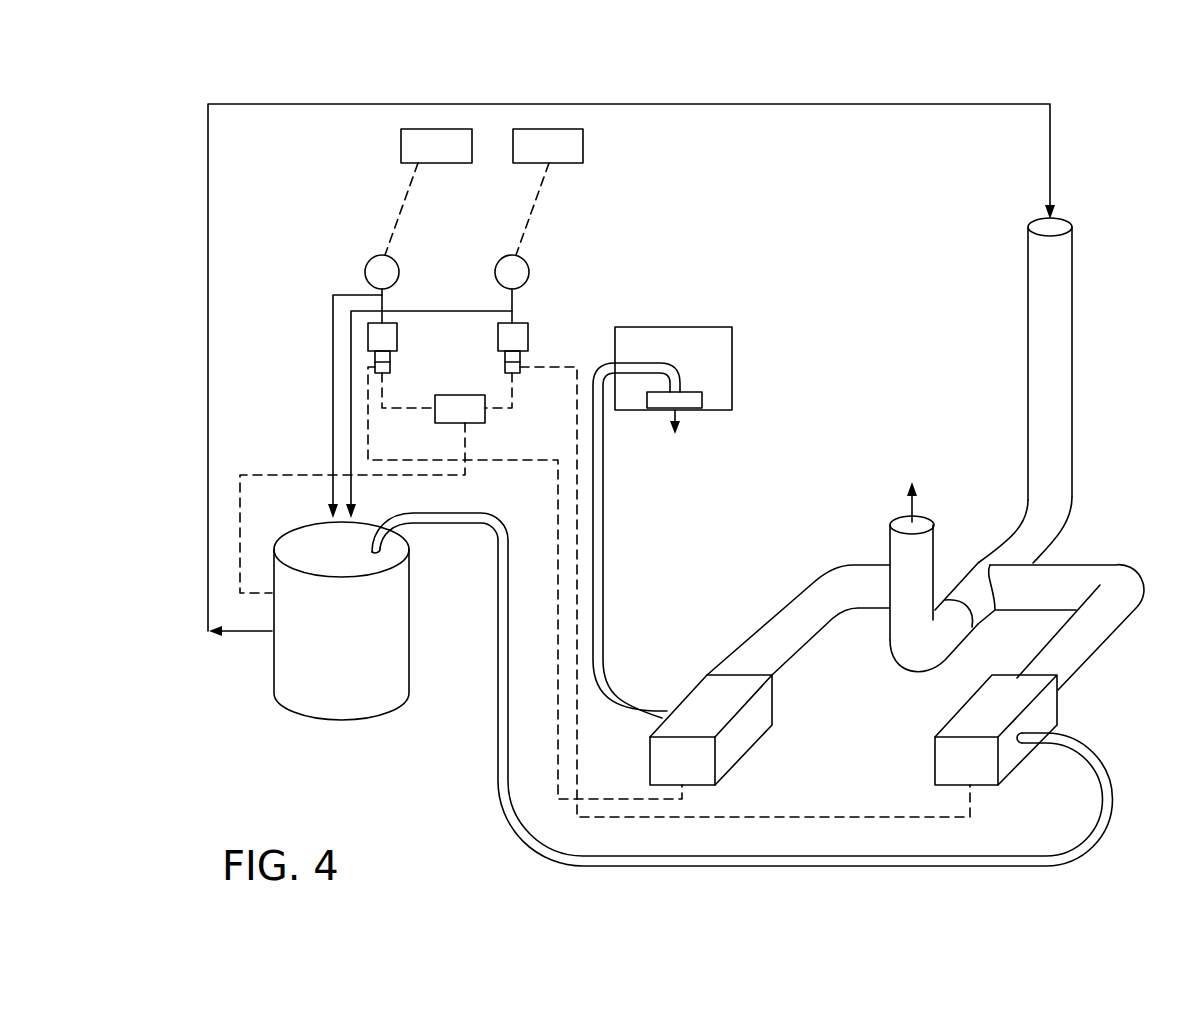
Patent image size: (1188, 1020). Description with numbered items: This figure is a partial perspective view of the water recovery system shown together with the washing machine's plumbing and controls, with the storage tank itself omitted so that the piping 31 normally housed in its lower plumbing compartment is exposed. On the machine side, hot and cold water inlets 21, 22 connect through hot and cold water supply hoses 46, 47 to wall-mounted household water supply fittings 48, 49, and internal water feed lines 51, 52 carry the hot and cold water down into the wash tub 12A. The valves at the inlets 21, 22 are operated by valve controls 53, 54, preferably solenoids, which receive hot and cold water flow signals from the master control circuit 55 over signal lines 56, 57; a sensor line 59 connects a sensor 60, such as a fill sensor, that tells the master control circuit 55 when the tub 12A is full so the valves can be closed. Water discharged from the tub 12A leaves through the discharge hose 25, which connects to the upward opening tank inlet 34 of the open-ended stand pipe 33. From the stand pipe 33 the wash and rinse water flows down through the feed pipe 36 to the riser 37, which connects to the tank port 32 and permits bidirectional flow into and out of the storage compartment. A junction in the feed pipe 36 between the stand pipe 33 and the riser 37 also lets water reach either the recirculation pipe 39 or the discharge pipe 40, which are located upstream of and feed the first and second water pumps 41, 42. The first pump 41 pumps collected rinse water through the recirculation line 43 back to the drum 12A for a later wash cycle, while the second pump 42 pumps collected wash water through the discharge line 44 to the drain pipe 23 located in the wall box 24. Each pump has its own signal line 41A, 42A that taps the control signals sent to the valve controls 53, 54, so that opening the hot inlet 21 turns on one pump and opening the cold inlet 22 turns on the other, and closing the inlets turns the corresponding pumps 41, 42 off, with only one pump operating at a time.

The wash tub 12A is at (300, 693).
The hot water inlet 21 is at (530, 272).
The cold water inlet 22 is at (365, 270).
The drain pipe 23 is at (700, 400).
The wall box 24 is at (707, 327).
The discharge hose 25 is at (848, 103).
The piping 31 is at (1082, 340).
The tank port 32 is at (902, 525).
The stand pipe 33 is at (1074, 280).
The tank inlet 34 is at (1062, 213).
The feed pipe 36 is at (1048, 522).
The riser 37 is at (900, 635).
The recirculation pipe 39 is at (1098, 633).
The discharge pipe 40 is at (773, 630).
The first water pump 41 is at (1046, 712).
The signal line 41A is at (637, 817).
The second water pump 42 is at (698, 690).
The signal line 42A is at (558, 745).
The recirculation line 43 is at (890, 866).
The discharge line 44 is at (637, 363).
The hot water supply hose 46 is at (532, 200).
The cold water supply hose 47 is at (400, 218).
The hot water supply fitting 48 is at (549, 129).
The cold water supply fitting 49 is at (418, 129).
The internal water feed line 51 is at (351, 487).
The internal water feed line 52 is at (333, 460).
The valve control 53 is at (528, 338).
The valve control 54 is at (368, 340).
The master control circuit 55 is at (465, 395).
The signal line 56 is at (497, 408).
The signal line 57 is at (382, 408).
The sensor line 59 is at (240, 497).
The sensor 60 is at (272, 603).